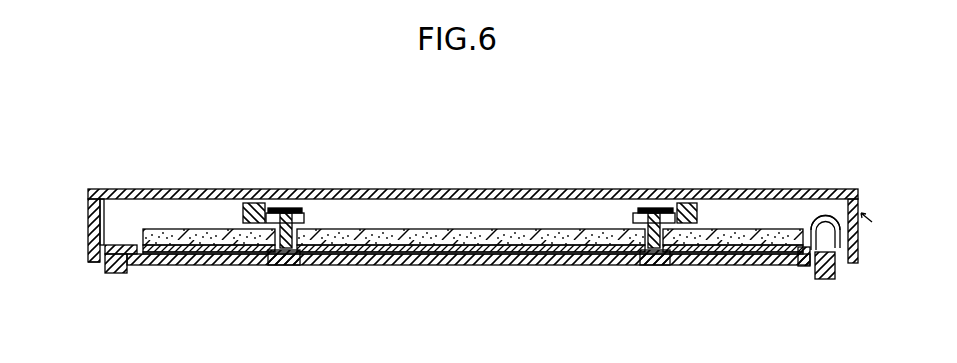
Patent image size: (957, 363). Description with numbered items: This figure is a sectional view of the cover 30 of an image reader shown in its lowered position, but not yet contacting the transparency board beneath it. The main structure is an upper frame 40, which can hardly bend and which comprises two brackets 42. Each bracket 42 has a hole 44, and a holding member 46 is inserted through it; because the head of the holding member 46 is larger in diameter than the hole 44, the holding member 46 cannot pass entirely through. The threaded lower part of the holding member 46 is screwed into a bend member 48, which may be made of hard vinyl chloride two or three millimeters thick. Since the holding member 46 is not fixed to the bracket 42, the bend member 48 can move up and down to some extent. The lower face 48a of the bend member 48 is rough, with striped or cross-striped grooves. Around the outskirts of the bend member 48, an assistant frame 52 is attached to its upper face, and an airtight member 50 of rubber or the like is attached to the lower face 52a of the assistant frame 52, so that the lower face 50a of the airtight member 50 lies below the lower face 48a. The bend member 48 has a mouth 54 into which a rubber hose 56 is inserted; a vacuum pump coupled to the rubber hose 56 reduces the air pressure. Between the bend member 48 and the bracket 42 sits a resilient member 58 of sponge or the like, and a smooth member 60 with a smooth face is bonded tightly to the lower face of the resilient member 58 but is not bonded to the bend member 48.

The cover 30 is at (847, 168).
The upper frame 40 is at (558, 190).
The bracket 42 is at (248, 203).
The hole 44 is at (293, 218).
The holding member 46 is at (296, 208).
The bend member 48 is at (235, 267).
The lower face of the bend member 48a is at (580, 267).
The airtight member 50 is at (107, 273).
The lower face of the airtight member 50a is at (128, 273).
The assistant frame 52 is at (123, 243).
The lower face of the assistant frame 52a is at (105, 268).
The mouth 54 is at (812, 253).
The rubber hose 56 is at (822, 213).
The resilient member 58 is at (510, 229).
The smooth member 60 is at (450, 229).